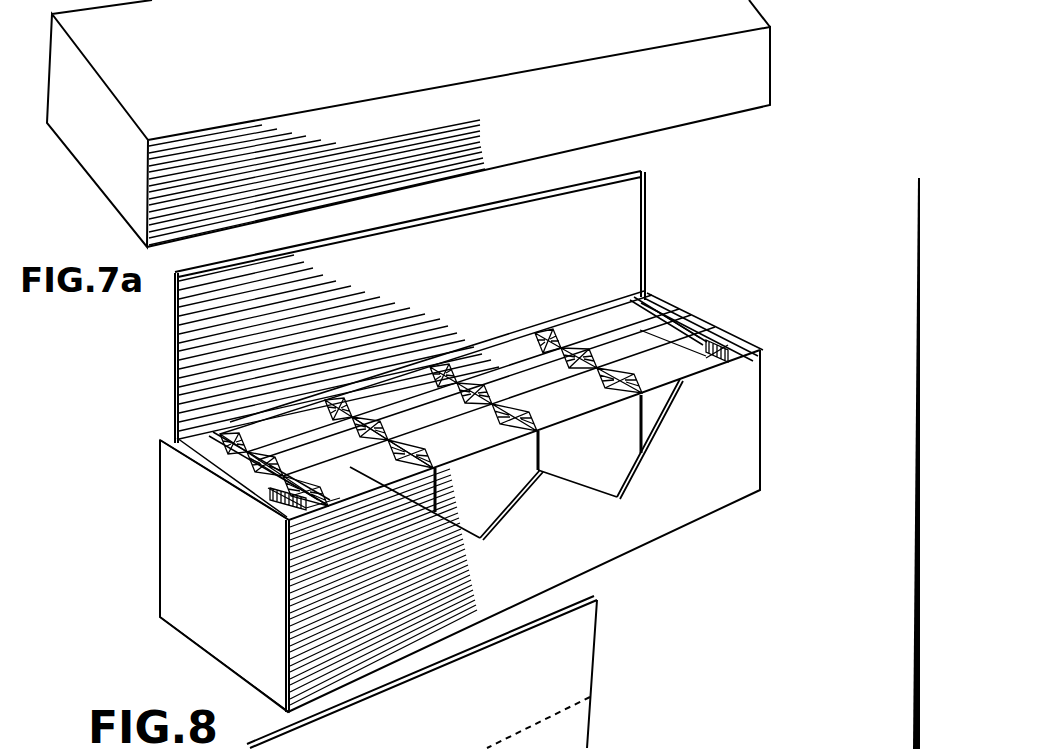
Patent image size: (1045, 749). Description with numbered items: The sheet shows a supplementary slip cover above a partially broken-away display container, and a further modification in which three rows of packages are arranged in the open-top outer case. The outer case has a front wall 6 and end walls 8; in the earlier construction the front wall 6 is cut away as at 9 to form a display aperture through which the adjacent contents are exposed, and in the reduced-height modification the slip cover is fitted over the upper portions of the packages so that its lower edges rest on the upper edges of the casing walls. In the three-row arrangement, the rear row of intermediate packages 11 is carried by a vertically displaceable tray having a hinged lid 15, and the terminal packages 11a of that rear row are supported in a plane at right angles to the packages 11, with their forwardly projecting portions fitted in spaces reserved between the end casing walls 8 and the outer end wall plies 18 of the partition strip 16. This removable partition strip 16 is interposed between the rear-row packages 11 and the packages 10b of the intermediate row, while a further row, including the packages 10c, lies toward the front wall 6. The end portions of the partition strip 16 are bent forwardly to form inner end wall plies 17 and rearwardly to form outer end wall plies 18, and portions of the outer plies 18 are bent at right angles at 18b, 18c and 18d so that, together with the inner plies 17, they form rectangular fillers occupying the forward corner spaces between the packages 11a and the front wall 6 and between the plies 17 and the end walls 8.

In FIG. 7A, the front wall 6 is at (620, 545).
In FIG. 7A, the end walls 8 is at (222, 635).
In FIG. 7A, the display aperture 9 is at (635, 457).
In FIG. 7A, the packages of the intermediate row 10b is at (349, 441).
In FIG. 7A, the cross partition 10c is at (390, 465).
In FIG. 7A, the packages of the rear row 11 is at (338, 398).
In FIG. 7A, the terminal packages of the rear row 11a is at (663, 293).
In FIG. 7A, the hinged lid 15 is at (410, 307).
In FIG. 8, the hinged lid 15 is at (422, 672).
In FIG. 7A, the partition strip 16 is at (493, 357).
In FIG. 7A, the inner end wall plies 17 is at (703, 360).
In FIG. 7A, the outer end wall plies 18 is at (703, 298).
In FIG. 7A, the right-angle bend of outer end wall ply 18b is at (710, 340).
In FIG. 7A, the right-angle bend of outer end wall ply 18c is at (730, 340).
In FIG. 7A, the right-angle bend of outer end wall ply 18d is at (730, 360).